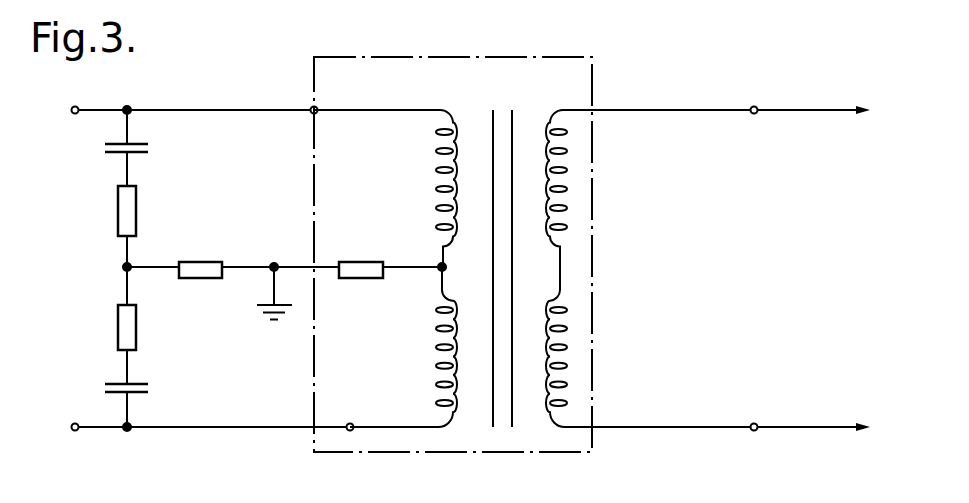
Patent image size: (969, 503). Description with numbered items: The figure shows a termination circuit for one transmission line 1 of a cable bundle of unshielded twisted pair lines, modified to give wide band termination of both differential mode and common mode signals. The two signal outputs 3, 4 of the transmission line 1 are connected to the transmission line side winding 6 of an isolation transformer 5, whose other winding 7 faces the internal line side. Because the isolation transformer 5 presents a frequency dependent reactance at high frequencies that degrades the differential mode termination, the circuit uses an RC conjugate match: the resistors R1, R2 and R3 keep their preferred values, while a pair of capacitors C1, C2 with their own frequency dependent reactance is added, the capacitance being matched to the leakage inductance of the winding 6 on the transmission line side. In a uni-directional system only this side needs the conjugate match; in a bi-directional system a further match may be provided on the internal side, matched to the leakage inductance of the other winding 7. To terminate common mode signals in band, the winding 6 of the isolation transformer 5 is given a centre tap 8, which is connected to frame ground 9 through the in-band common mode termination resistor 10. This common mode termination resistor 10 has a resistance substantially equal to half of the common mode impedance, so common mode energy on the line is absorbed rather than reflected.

The transmission line 1 is at (163, 79).
The signal output 3 is at (318, 106).
The signal output 4 is at (347, 430).
The isolation transformer 5 is at (594, 451).
The transmission line side winding 6 is at (442, 372).
The other winding 7 is at (567, 404).
The centre tap 8 is at (438, 272).
The frame ground 9 is at (268, 304).
The in-band common mode termination resistor 10 is at (367, 263).
The capacitor C1 is at (150, 147).
The capacitor C2 is at (145, 392).
The resistor R1 is at (126, 232).
The resistor R2 is at (127, 334).
The resistor R3 is at (198, 268).